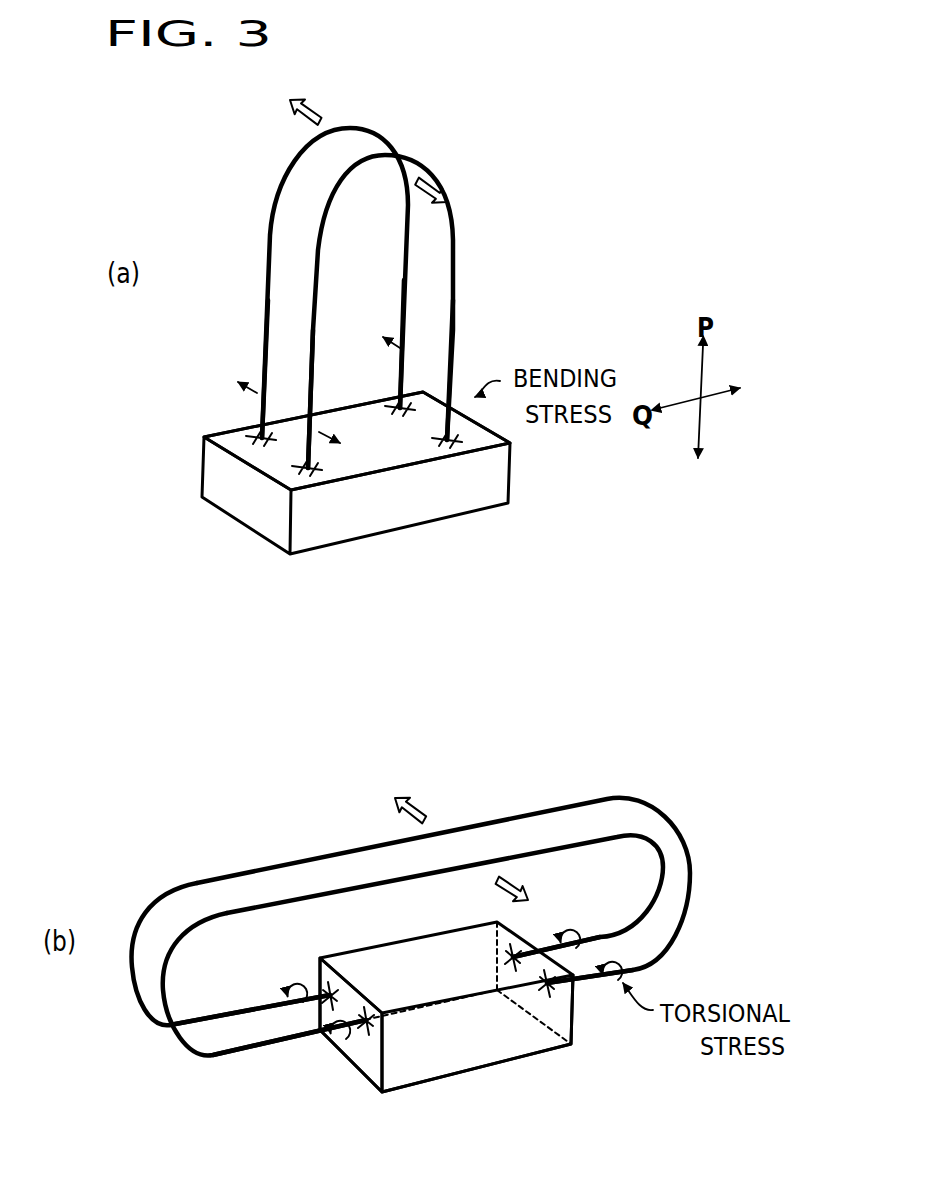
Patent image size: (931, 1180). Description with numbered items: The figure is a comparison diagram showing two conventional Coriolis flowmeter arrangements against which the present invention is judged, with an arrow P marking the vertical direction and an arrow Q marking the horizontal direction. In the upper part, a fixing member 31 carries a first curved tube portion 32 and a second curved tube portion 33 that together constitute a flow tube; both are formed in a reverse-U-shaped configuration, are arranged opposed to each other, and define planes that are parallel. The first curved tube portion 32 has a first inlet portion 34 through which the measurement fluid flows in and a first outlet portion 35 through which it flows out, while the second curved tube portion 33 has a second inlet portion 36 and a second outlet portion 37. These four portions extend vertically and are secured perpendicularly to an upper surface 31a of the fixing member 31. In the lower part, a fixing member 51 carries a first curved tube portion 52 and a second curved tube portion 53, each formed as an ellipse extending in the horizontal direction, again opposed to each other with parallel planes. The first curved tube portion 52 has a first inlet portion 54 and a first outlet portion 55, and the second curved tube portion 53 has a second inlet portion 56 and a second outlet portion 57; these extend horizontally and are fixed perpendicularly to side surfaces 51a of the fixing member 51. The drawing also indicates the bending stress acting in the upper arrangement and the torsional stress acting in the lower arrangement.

The fixing member 31 is at (250, 510).
The upper surface of the fixing member 31a is at (230, 440).
The first curved tube portion 32 is at (468, 248).
The second curved tube portion 33 is at (253, 250).
The first inlet portion 34 is at (317, 340).
The first outlet portion 35 is at (455, 320).
The second inlet portion 36 is at (263, 353).
The second outlet portion 37 is at (403, 283).
The fixing member 51 is at (443, 1060).
The side surfaces of the fixing member 51a is at (368, 1060).
The first curved tube portion 52 is at (544, 838).
The second curved tube portion 53 is at (348, 843).
The first inlet portion 54 is at (278, 1045).
The first outlet portion 55 is at (640, 968).
The second inlet portion 56 is at (253, 1013).
The second outlet portion 57 is at (603, 937).